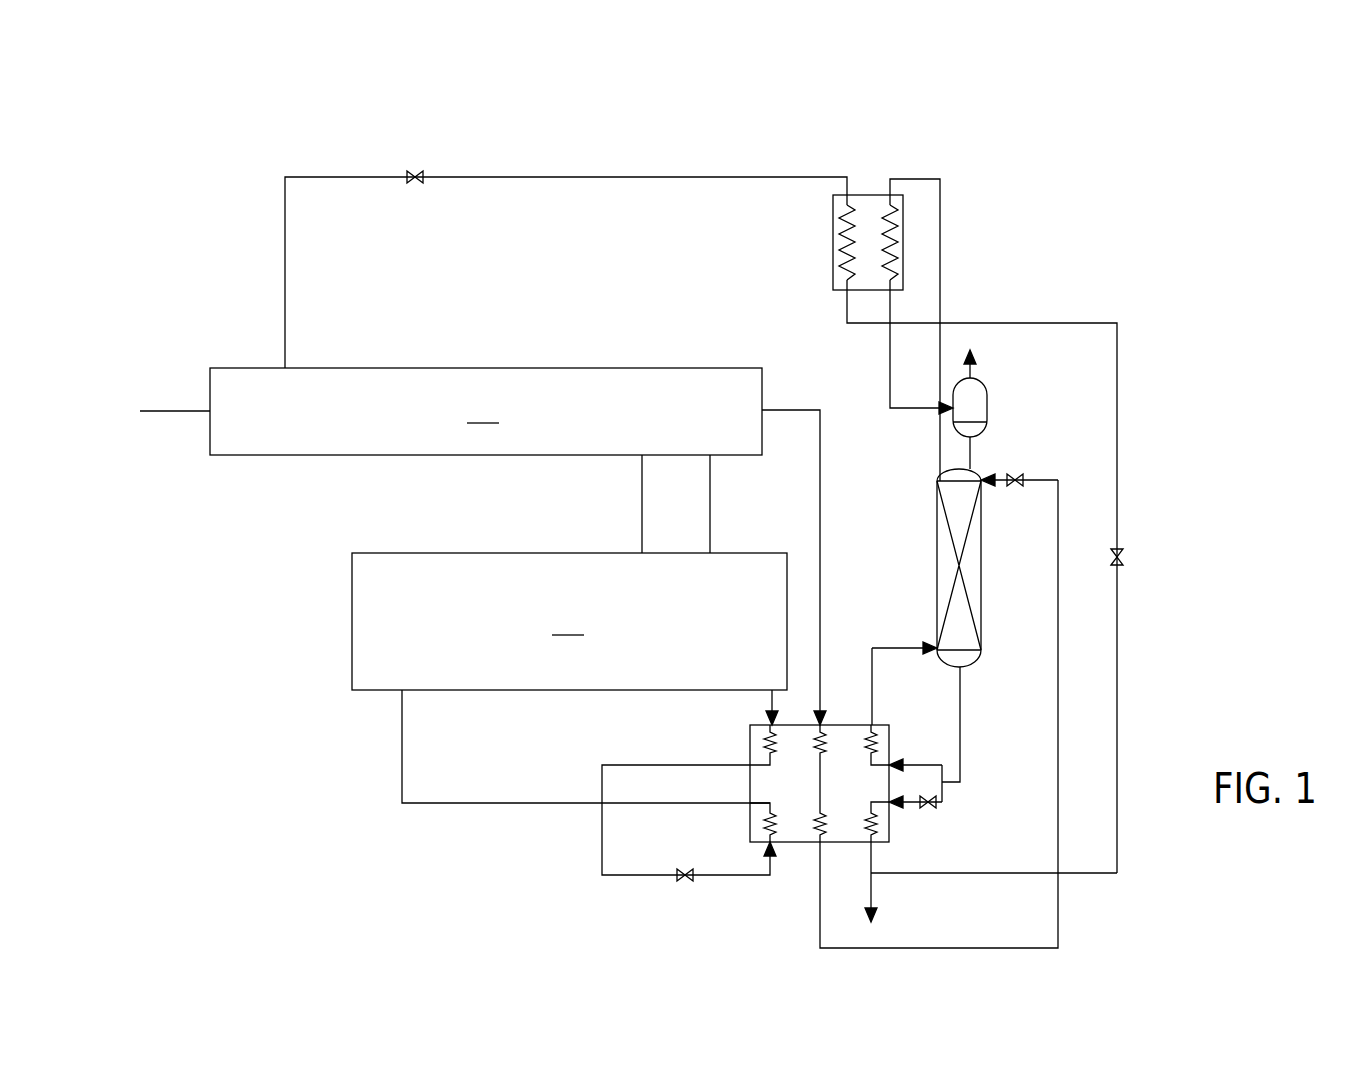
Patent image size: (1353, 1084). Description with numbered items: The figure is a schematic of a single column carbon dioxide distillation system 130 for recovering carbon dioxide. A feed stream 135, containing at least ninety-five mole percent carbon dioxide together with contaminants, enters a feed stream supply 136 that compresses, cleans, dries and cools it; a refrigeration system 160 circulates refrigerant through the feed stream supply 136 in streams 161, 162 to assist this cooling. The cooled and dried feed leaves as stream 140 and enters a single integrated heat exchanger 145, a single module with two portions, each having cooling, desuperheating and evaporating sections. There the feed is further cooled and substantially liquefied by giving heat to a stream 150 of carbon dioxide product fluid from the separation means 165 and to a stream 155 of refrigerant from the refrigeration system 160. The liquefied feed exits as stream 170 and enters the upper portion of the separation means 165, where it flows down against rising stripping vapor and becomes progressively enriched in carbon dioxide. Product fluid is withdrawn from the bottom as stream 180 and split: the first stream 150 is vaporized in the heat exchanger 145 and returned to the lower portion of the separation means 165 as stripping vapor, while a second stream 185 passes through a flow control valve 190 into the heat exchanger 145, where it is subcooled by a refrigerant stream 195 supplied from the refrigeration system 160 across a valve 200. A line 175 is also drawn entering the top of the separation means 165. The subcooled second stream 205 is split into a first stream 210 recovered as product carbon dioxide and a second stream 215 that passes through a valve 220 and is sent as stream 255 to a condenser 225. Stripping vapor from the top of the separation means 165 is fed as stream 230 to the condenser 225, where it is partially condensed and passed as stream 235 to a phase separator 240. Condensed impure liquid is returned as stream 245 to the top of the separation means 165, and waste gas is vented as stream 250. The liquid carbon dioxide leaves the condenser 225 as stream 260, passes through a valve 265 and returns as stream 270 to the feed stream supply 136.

The single column carbon dioxide distillation system 130 is at (995, 175).
The feed stream 135 is at (190, 413).
The feed stream supply 136 is at (486, 411).
The stream 140 is at (822, 478).
The single integrated heat exchanger 145 is at (847, 723).
The first stream 150 is at (940, 765).
The stream of refrigerant 155 is at (765, 698).
The refrigeration system 160 is at (569, 621).
The stream 161 is at (642, 500).
The stream 162 is at (710, 500).
The separation means 165 is at (983, 598).
The stream 170 is at (822, 880).
The reflux line 175 is at (1015, 473).
The stream 180 is at (962, 685).
The second stream 185 is at (945, 798).
The flow control valve 190 is at (928, 808).
The refrigerant stream 195 is at (728, 885).
The valve 200 is at (683, 885).
The subcooled second stream 205 is at (873, 862).
The first stream 210 is at (880, 884).
The second stream 215 is at (1000, 873).
The valve 220 is at (1120, 563).
The condenser 225 is at (865, 195).
The stream 230 is at (940, 272).
The stream 235 is at (888, 358).
The phase separator 240 is at (990, 396).
The stream 245 is at (972, 455).
The stream 250 is at (983, 373).
The stream 255 is at (1118, 393).
The stream 260 is at (480, 177).
The valve 265 is at (415, 170).
The stream 270 is at (345, 177).